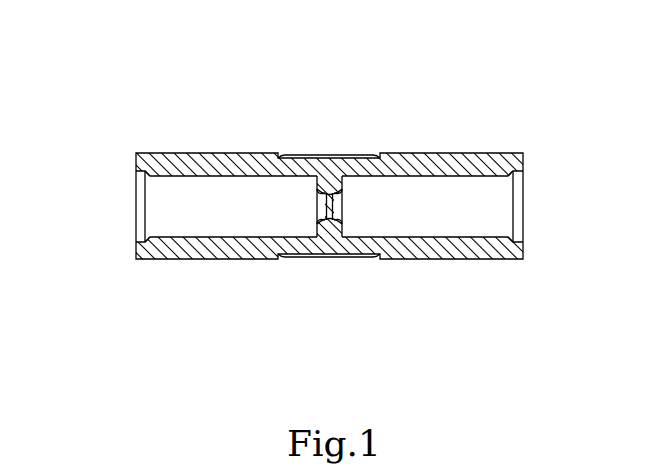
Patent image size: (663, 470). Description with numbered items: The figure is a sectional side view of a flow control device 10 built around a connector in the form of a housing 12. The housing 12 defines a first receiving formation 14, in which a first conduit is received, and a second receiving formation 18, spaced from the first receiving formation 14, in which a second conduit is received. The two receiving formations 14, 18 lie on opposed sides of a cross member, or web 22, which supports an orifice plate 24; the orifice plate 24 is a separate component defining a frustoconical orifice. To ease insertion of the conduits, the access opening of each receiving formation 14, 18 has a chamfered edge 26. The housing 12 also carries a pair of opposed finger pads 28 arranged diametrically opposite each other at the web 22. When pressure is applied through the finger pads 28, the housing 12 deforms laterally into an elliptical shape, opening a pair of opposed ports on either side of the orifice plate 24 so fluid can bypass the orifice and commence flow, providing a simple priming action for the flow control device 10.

The flow control device 10 is at (548, 124).
The housing 12 is at (179, 153).
The first receiving formation 14 is at (177, 214).
The second receiving formation 18 is at (483, 202).
The web 22 is at (334, 192).
The orifice plate 24 is at (325, 212).
The chamfered edge 26 is at (143, 178).
The finger pads 28 is at (328, 158).